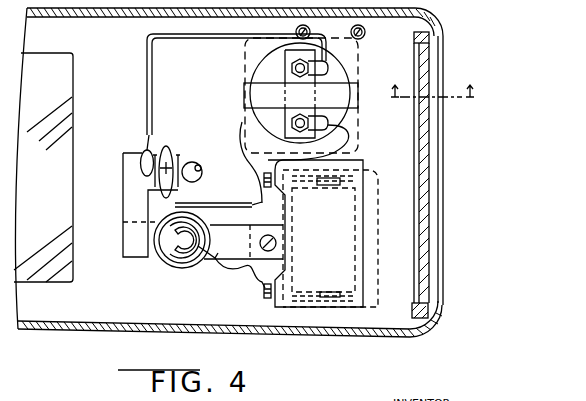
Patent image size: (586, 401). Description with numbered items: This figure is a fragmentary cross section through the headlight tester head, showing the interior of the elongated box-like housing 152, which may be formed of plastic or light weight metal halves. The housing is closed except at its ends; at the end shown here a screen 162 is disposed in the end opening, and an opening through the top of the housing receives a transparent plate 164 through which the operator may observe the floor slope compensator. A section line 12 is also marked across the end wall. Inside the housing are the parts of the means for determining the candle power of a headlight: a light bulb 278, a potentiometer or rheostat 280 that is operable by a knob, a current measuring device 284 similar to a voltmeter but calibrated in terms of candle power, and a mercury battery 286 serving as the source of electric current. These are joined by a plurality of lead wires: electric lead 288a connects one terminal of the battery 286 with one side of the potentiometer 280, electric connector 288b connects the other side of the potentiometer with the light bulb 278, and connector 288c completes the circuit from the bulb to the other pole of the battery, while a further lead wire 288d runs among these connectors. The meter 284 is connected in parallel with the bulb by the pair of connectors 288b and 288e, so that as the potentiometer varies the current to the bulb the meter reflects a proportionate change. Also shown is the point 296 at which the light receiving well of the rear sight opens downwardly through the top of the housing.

The section line 12- 12 is at (434, 99).
The housing 152 is at (369, 346).
The screen 162 is at (426, 268).
The transparent plate 164 is at (53, 275).
The light bulb 278 is at (170, 150).
The potentiometer 280 is at (180, 266).
The current measuring device 284 is at (340, 79).
The mercury battery 286 is at (350, 198).
The electric lead 288a is at (232, 284).
The electric connector 288b is at (128, 213).
The connector 288c is at (221, 197).
The lead wire 288d is at (146, 97).
The connector 288e is at (240, 128).
The opening through the top of the housing 296 is at (192, 162).